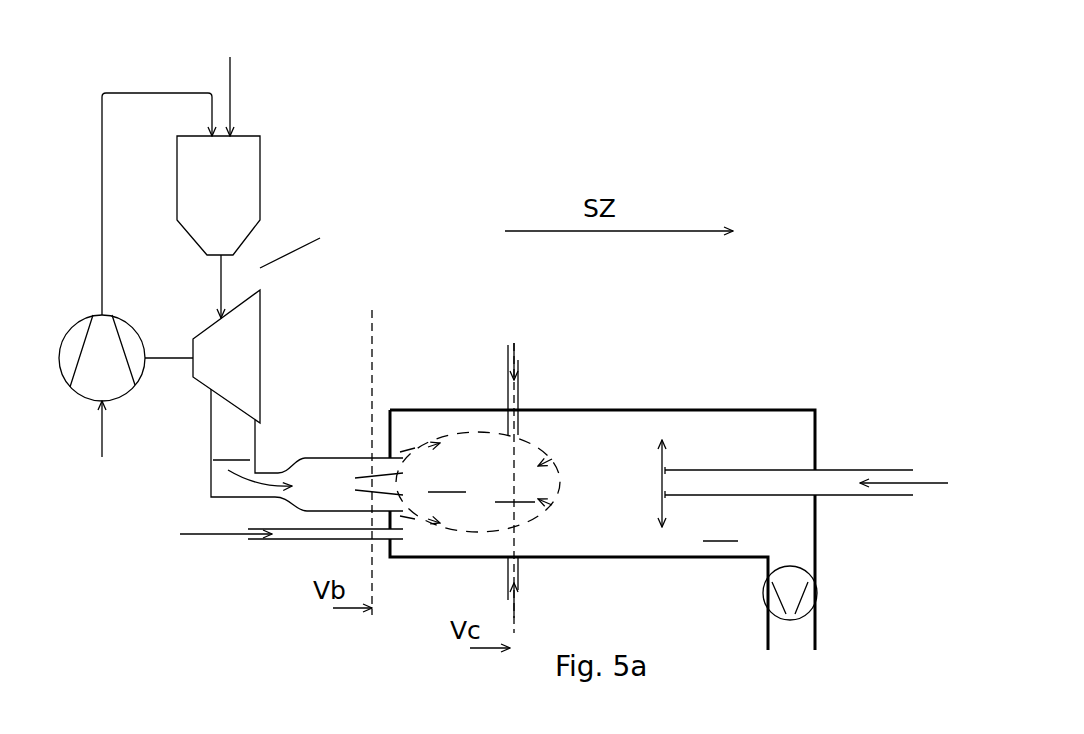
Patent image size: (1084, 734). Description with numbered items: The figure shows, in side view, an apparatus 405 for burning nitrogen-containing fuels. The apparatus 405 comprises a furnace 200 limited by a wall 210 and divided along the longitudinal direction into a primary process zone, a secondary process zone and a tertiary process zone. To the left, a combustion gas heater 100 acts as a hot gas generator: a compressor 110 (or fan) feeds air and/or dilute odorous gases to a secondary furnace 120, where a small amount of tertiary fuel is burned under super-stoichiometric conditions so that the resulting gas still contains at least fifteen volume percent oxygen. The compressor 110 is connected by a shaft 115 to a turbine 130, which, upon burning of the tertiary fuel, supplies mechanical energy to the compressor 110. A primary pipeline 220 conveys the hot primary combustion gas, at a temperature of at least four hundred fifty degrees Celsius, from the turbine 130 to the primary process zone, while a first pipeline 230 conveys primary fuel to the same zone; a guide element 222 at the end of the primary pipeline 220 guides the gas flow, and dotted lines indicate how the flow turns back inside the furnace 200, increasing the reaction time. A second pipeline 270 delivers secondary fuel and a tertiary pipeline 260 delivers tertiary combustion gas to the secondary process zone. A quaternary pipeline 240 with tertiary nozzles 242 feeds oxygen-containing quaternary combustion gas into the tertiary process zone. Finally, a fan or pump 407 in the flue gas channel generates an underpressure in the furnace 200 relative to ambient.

The combustion gas heater 100 is at (398, 147).
The apparatus 405 is at (718, 112).
The compressor 110 is at (77, 315).
The shaft 115 is at (168, 352).
The secondary furnace 120 is at (248, 136).
The turbine 130 is at (260, 325).
The furnace 200 is at (620, 490).
The wall 210 is at (707, 409).
The primary pipeline 220 is at (352, 455).
The guide element 222 is at (365, 490).
The first pipeline 230 is at (310, 538).
The quaternary pipeline 240 is at (875, 470).
The tertiary nozzles 242 is at (668, 468).
The tertiary pipeline 260 is at (519, 560).
The second pipeline 270 is at (519, 385).
The fan or pump 407 is at (817, 595).